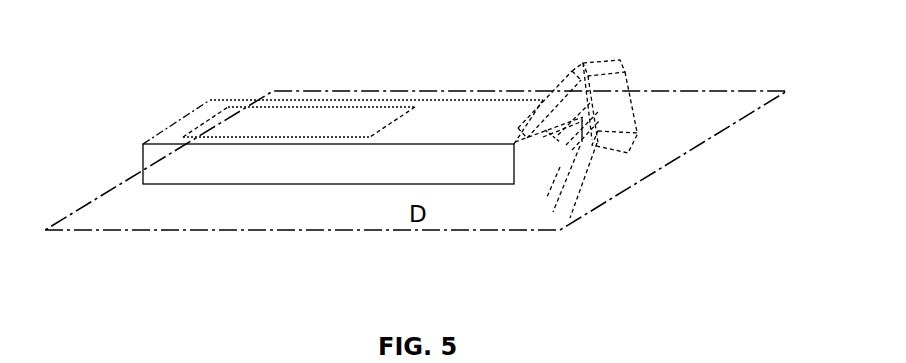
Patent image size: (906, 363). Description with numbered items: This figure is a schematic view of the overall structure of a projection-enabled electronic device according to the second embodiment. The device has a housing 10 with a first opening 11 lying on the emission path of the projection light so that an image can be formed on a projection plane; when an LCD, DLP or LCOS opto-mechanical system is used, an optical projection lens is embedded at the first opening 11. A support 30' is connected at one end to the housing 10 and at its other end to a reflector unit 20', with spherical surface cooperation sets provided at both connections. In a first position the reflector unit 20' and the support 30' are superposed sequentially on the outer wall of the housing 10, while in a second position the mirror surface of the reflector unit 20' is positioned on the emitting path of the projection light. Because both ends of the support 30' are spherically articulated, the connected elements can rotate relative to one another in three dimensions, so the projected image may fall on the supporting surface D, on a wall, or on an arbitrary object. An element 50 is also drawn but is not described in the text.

The housing 10 is at (264, 184).
The first opening 11 is at (549, 129).
The cover plate 50 is at (277, 118).
The support 30' is at (548, 112).
The reflector unit 20' is at (637, 88).